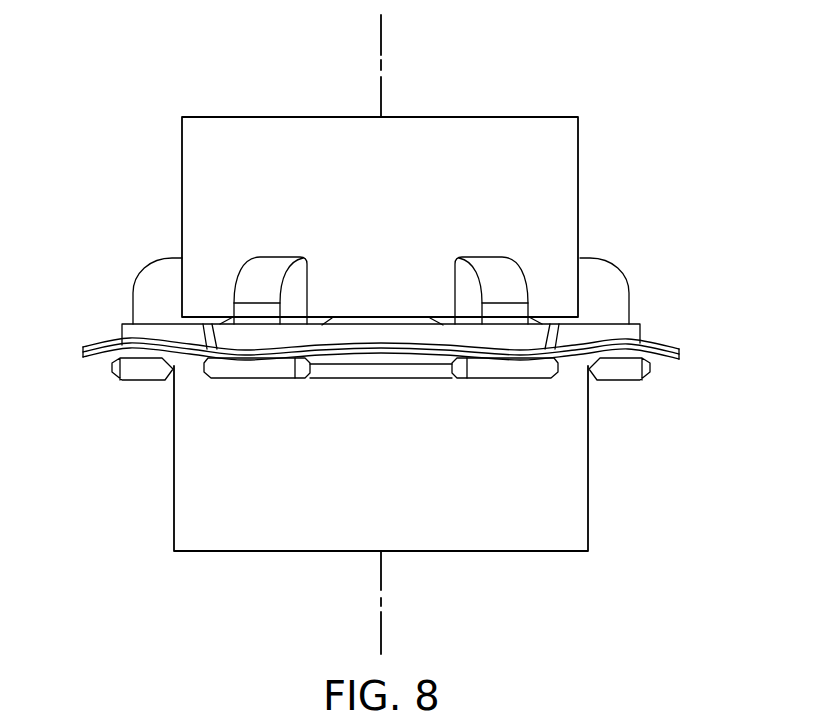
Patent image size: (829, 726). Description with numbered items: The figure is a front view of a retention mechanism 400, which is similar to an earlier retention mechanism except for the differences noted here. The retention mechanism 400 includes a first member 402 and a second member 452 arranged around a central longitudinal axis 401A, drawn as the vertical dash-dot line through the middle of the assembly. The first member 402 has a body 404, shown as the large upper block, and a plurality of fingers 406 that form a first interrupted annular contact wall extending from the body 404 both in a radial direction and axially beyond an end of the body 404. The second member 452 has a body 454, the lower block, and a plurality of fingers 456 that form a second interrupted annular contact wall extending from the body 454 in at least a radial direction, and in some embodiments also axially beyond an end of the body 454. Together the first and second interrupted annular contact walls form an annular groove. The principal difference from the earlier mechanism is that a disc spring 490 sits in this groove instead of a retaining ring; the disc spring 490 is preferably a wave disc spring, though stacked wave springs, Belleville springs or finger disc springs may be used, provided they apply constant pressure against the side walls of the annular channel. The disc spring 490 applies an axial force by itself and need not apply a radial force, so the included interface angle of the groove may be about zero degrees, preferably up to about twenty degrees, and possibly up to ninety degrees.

The retention mechanism 400 is at (178, 60).
The central longitudinal axis 401A is at (381, 66).
The first member 402 is at (633, 222).
The body 404 is at (530, 143).
The plurality of fingers 406 is at (604, 382).
The second member 452 is at (633, 456).
The body 454 is at (540, 500).
The plurality of fingers 456 is at (618, 325).
The disc spring 490 is at (675, 346).